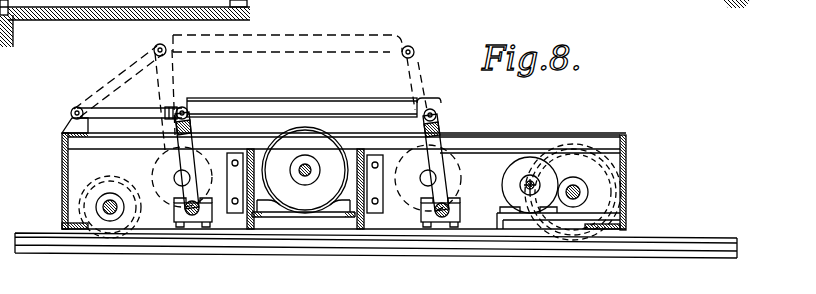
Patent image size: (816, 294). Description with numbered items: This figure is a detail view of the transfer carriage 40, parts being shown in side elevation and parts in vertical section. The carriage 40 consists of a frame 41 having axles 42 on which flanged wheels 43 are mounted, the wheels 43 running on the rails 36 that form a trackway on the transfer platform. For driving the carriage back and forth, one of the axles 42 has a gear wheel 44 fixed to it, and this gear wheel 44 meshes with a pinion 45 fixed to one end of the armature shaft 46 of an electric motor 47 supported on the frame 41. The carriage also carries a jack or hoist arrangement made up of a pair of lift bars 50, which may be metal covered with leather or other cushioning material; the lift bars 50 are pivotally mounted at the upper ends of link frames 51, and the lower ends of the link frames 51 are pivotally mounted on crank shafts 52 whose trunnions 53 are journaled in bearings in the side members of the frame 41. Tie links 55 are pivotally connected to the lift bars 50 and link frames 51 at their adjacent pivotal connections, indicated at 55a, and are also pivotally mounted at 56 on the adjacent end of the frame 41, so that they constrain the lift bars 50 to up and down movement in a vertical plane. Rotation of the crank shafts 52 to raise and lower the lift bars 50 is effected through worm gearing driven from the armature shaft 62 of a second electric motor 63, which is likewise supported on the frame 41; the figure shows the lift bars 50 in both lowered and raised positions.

The rails 36 is at (673, 238).
The transfer carriage 40 is at (627, 157).
The frame 41 is at (600, 121).
The axles 42 is at (112, 213).
The flanged wheels 43 is at (127, 238).
The gear wheel 44 is at (593, 163).
The pinion 45 is at (522, 186).
The armature shaft 46 is at (531, 181).
The electric motor 47 is at (508, 170).
The lift bars 50 is at (312, 35).
The link frame 51 is at (195, 133).
The crank shaft 52 is at (193, 217).
The trunnions 53 is at (173, 180).
The tie links 55 is at (133, 71).
The pivotal connection 55a is at (183, 107).
The pivotal mounting 56 is at (73, 112).
The armature shaft 62 is at (309, 167).
The electric motor 63 is at (303, 172).